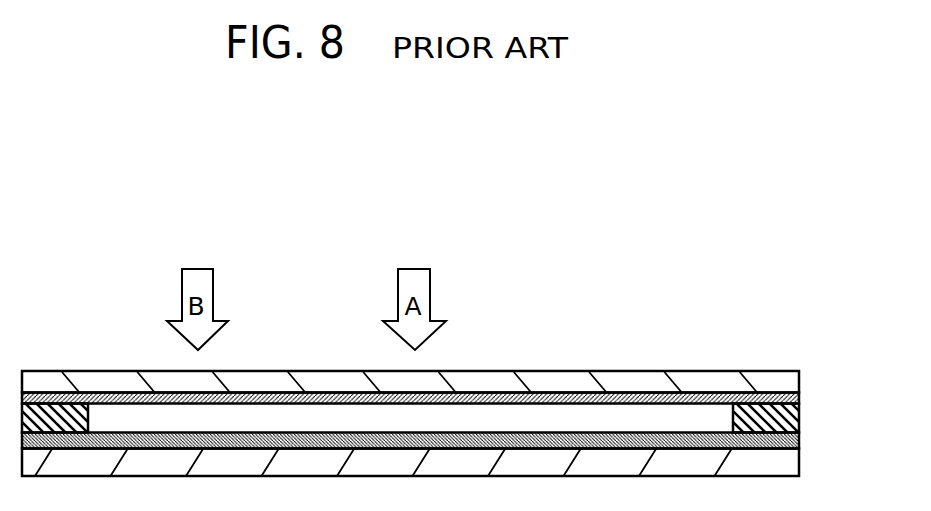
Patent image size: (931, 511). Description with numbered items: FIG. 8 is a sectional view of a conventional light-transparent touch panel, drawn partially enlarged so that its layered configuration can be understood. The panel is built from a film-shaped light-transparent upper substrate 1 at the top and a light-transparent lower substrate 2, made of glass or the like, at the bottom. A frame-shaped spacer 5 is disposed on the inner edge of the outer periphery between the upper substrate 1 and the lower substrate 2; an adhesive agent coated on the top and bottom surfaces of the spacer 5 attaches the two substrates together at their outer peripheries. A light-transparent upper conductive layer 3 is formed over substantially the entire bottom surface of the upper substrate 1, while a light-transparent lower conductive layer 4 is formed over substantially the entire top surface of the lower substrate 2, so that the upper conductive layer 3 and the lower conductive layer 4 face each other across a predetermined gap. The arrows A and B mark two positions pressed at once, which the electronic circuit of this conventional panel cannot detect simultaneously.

The upper substrate 1 is at (783, 385).
The lower substrate 2 is at (785, 463).
The upper conductive layer 3 is at (800, 398).
The lower conductive layer 4 is at (787, 440).
The spacer 5 is at (787, 422).